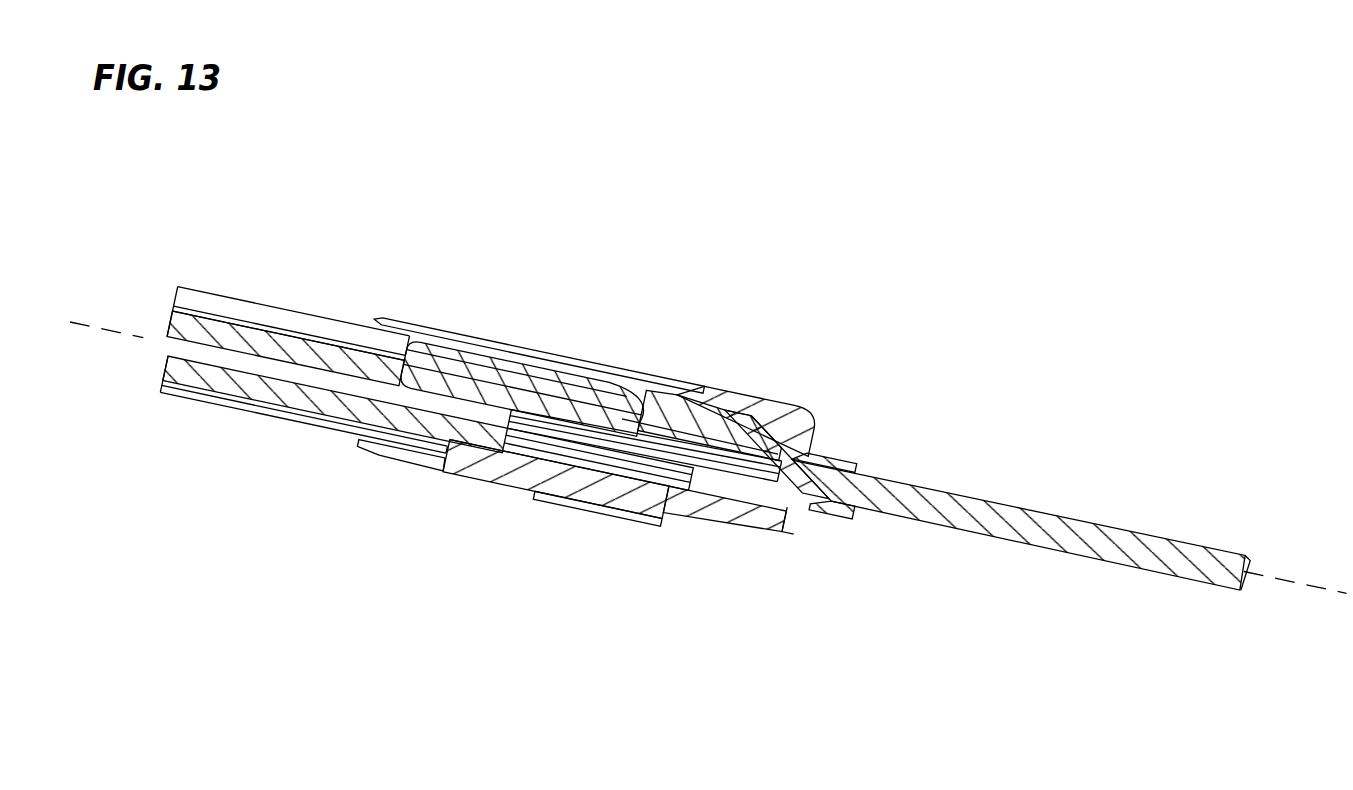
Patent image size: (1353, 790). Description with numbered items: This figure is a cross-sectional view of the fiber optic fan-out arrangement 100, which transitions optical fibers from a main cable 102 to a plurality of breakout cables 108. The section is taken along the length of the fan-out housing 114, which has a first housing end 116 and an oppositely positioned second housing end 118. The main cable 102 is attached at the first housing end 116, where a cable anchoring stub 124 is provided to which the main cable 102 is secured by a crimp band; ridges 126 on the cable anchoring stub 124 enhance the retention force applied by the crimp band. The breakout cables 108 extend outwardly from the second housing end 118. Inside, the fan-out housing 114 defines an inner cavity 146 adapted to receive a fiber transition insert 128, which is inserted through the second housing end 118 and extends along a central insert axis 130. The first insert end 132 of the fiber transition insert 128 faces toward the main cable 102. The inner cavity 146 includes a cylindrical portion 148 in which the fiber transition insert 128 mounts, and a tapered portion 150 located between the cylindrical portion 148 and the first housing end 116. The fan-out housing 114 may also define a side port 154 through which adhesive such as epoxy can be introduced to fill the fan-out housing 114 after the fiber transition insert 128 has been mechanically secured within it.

The fiber optic fan-out arrangement 100 is at (763, 291).
The main cable 102 is at (1013, 498).
The breakout cables 108 is at (264, 284).
The fan-out housing 114 is at (615, 347).
The first housing end 116 is at (788, 547).
The second housing end 118 is at (352, 475).
The cable anchoring stub 124 is at (845, 450).
The ridges 126 is at (822, 513).
The fiber transition insert 128 is at (614, 504).
The central insert axis 130 is at (105, 333).
The first insert end 132 is at (638, 478).
The inner cavity 146 is at (677, 405).
The cylindrical portion 148 is at (647, 395).
The tapered portion 150 is at (722, 495).
The side port 154 is at (718, 402).